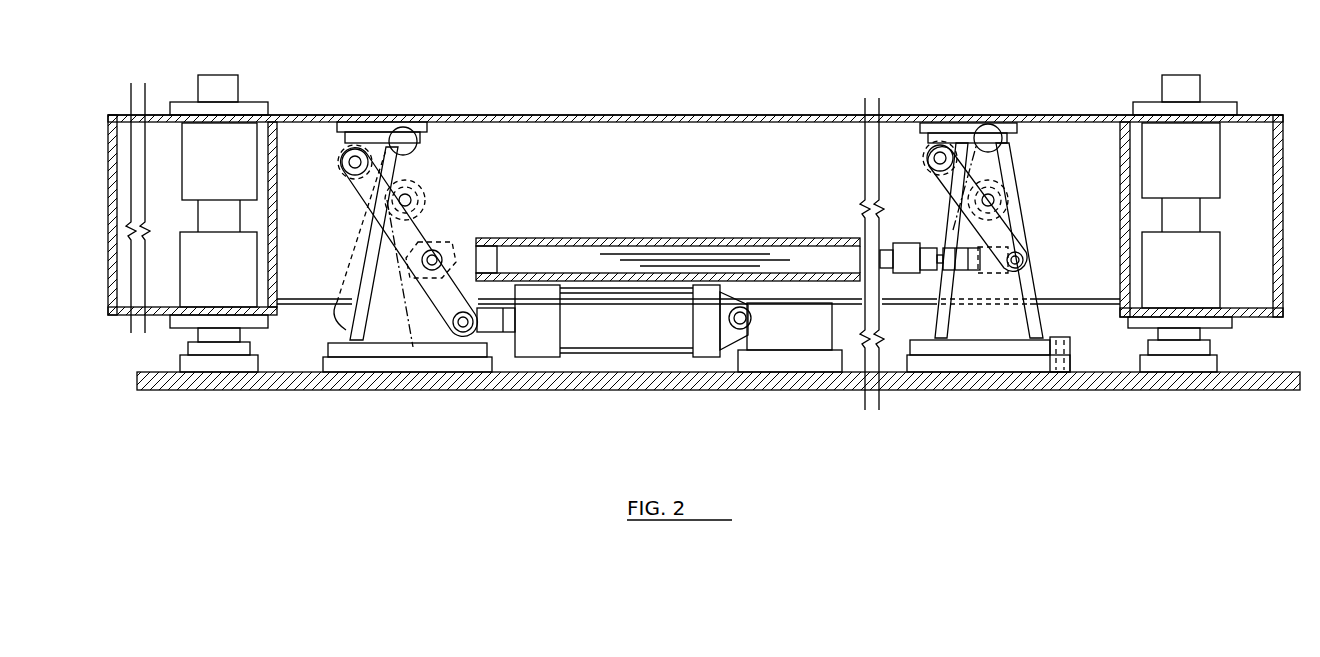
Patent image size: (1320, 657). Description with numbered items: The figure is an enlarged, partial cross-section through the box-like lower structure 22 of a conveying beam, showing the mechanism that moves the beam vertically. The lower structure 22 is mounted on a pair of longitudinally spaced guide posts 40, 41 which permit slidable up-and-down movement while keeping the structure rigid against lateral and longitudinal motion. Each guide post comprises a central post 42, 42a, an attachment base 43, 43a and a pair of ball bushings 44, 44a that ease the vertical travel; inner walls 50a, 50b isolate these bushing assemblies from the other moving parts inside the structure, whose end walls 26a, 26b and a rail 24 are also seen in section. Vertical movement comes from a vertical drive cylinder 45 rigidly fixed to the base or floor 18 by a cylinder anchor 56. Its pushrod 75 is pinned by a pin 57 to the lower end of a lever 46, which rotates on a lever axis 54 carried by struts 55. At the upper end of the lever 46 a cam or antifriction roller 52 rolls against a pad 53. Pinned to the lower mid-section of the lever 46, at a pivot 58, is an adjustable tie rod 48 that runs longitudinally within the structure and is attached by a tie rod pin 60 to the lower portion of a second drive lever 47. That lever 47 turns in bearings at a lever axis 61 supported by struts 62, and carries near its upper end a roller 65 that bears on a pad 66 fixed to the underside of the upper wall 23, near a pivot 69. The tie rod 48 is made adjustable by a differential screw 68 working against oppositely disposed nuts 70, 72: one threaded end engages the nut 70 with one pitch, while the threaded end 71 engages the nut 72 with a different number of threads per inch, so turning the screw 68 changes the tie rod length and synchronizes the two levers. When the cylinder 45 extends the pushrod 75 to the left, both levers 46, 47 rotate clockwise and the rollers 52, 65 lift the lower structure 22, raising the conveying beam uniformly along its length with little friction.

The base or floor 18 is at (630, 380).
The box-like lower structure 22 is at (533, 108).
The upper wall 23 is at (708, 115).
The guide rail 24 is at (292, 306).
The right end wall 26a is at (1283, 268).
The left end wall 26b is at (110, 305).
The guide post 40 is at (260, 95).
The guide post 41 is at (1156, 90).
The central post 42 is at (222, 95).
The central post 42a is at (1190, 90).
The attachment base 43 is at (245, 362).
The attachment base 43a is at (1215, 364).
The ball bushings 44 is at (195, 188).
The ball bushings 44a is at (1208, 172).
The vertical drive cylinder 45 is at (608, 334).
The lever 46 is at (447, 242).
The second drive lever 47 is at (972, 178).
The adjustable tie rod 48 is at (615, 240).
The inner wall 50a is at (1120, 160).
The inner wall 50b is at (268, 160).
The cam or antifriction roller 52 is at (342, 166).
The pad 53 is at (360, 124).
The lever axis 54 is at (410, 200).
The struts 55 is at (365, 302).
The cylinder anchor 56 is at (752, 352).
The pin 57 is at (462, 336).
The pivot pin 58 is at (442, 260).
The tie rod pin 60 is at (1024, 260).
The lever axis 61 is at (1002, 200).
The struts 62 is at (1040, 322).
The roller 65 is at (928, 152).
The pad 66 is at (962, 124).
The differential screw 68 is at (936, 298).
The pivot 69 is at (994, 258).
The nut 70 is at (966, 272).
The threaded end 71 is at (910, 255).
The nut 72 is at (926, 272).
The pushrod 75 is at (498, 333).